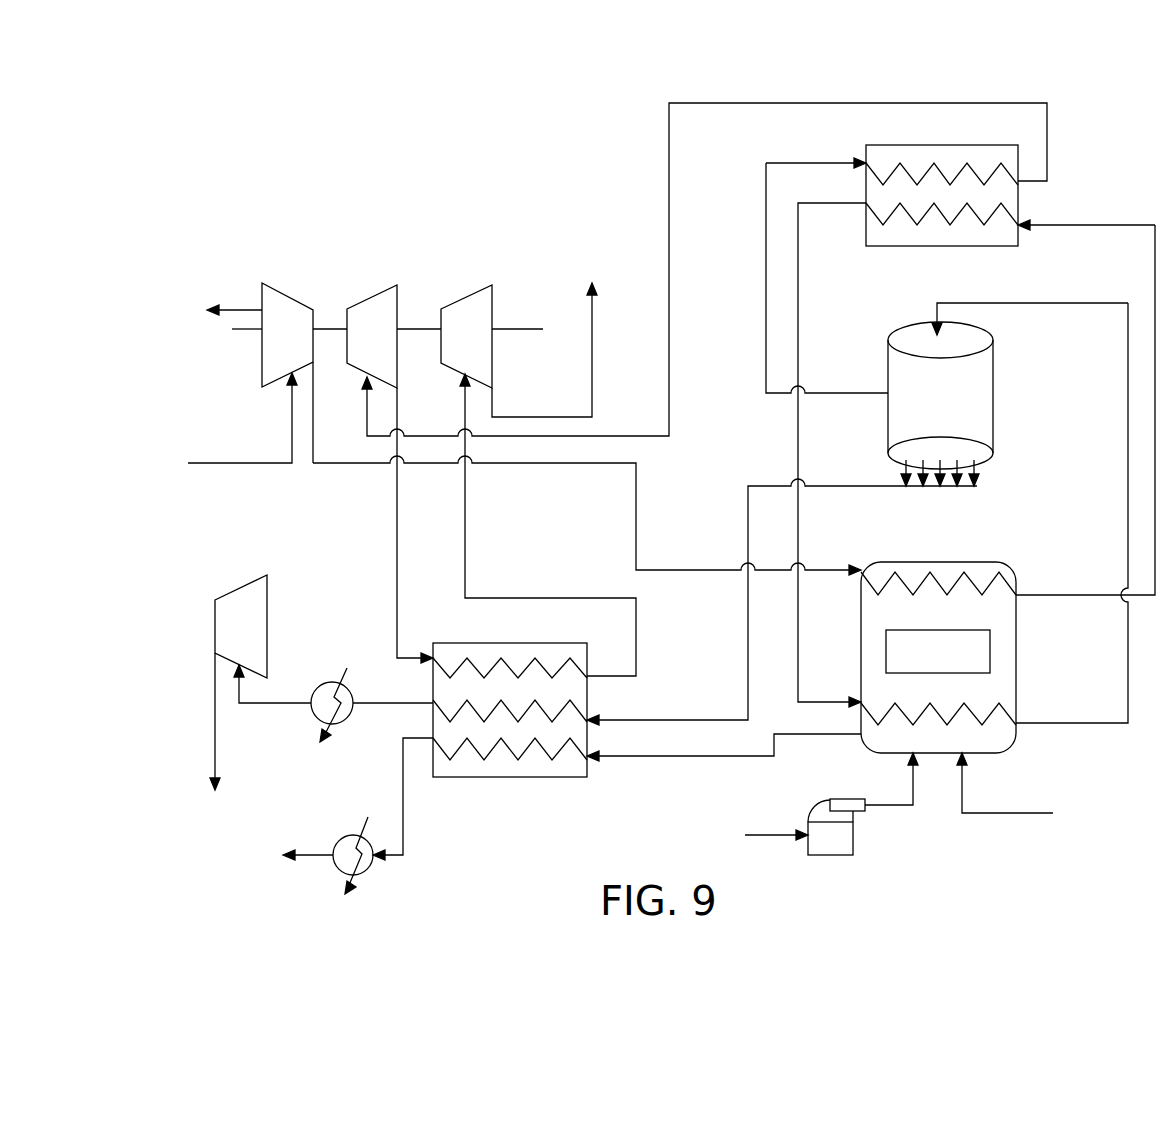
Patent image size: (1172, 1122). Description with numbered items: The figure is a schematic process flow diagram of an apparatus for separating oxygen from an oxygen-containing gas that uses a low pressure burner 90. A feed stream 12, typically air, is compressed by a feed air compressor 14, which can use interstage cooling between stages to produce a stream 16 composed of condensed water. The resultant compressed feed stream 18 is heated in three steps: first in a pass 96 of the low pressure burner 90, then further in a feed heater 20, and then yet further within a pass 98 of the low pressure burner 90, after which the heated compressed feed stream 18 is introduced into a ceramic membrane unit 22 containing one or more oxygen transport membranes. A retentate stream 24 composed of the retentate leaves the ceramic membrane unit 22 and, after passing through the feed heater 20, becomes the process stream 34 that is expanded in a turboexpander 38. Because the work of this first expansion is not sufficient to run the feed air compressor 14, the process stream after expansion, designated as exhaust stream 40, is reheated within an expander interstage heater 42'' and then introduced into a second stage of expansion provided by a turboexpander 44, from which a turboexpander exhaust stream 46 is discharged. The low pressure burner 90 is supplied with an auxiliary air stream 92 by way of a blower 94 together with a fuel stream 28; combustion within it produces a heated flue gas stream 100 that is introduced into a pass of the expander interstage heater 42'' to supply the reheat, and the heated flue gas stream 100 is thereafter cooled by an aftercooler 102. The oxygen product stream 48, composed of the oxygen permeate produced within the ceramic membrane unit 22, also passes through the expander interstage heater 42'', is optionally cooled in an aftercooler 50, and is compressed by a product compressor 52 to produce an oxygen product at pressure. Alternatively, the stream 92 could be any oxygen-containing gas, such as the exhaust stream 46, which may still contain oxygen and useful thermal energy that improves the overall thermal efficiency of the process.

The feed stream 12 is at (242, 465).
The feed air compressor 14 is at (270, 362).
The stream composed of condensed water 16 is at (233, 310).
The compressed feed stream 18 is at (713, 572).
The feed heater 20 is at (1005, 197).
The ceramic membrane unit 22 is at (995, 378).
The retentate stream 24 is at (766, 268).
The fuel stream 28 is at (1027, 818).
The process stream 34 is at (857, 102).
The turboexpander 38 is at (377, 310).
The exhaust stream 40 is at (396, 575).
The expander interstage heater 42'' is at (539, 735).
The turboexpander 44 is at (470, 310).
The turboexpander exhaust stream 46 is at (590, 340).
The oxygen product stream 48 is at (748, 520).
The aftercooler 50 is at (315, 715).
The product compressor 52 is at (252, 625).
The low pressure burner 90 is at (1028, 655).
The auxiliary air stream 92 is at (770, 832).
The blower 94 is at (826, 848).
The pass 96 is at (1005, 578).
The pass 98 is at (1010, 708).
The heated flue gas stream 100 is at (695, 757).
The aftercooler 102 is at (335, 870).